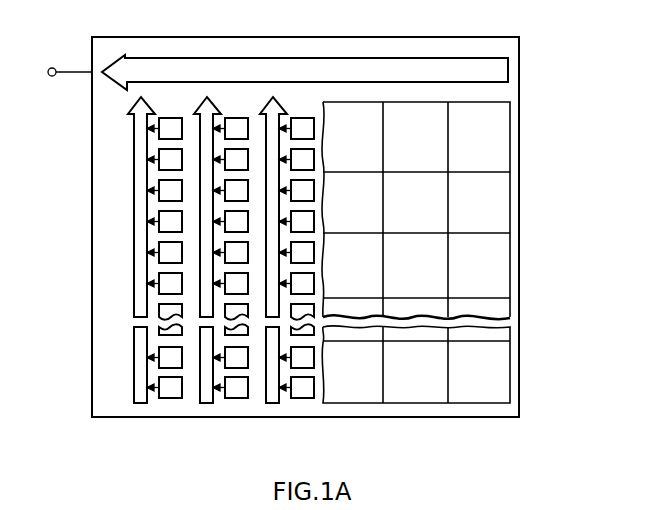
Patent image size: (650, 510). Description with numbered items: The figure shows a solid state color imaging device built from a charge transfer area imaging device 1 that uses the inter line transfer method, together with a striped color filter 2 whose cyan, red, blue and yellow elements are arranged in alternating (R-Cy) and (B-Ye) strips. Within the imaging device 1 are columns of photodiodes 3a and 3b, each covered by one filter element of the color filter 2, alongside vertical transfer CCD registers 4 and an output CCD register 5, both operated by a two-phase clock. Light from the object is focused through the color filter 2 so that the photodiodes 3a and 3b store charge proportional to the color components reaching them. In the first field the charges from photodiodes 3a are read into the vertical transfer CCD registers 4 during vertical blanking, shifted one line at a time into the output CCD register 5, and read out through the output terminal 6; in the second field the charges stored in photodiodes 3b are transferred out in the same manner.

The charge transfer area imaging device 1 is at (92, 318).
The striped color filter 2 is at (512, 152).
The photodiodes 3a is at (171, 127).
The photodiodes 3b is at (158, 152).
The vertical transfer CCD registers 4 is at (137, 198).
The output CCD register 5 is at (318, 70).
The output terminal 6 is at (50, 76).